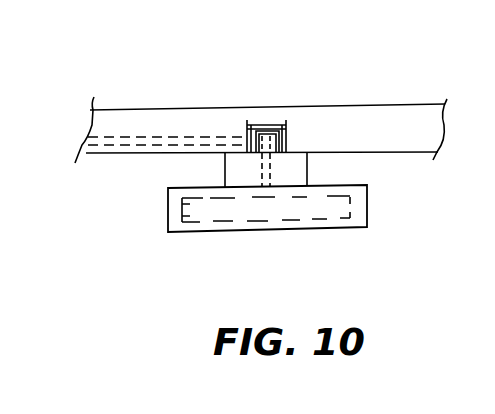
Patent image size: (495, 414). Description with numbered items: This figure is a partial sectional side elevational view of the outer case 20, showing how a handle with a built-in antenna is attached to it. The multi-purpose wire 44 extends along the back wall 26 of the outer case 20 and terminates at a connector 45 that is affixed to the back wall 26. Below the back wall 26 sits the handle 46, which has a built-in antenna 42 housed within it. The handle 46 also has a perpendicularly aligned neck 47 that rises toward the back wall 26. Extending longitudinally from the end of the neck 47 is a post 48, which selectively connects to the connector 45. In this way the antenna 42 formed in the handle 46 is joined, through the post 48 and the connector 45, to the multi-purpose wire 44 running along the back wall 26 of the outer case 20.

The outer case 20 is at (261, 94).
The back wall 26 is at (345, 105).
The multi-purpose wire 44 is at (121, 143).
The connector 45 is at (262, 122).
The post 48 is at (288, 135).
The neck 47 is at (308, 170).
The handle 46 is at (369, 205).
The antenna 42 is at (182, 202).